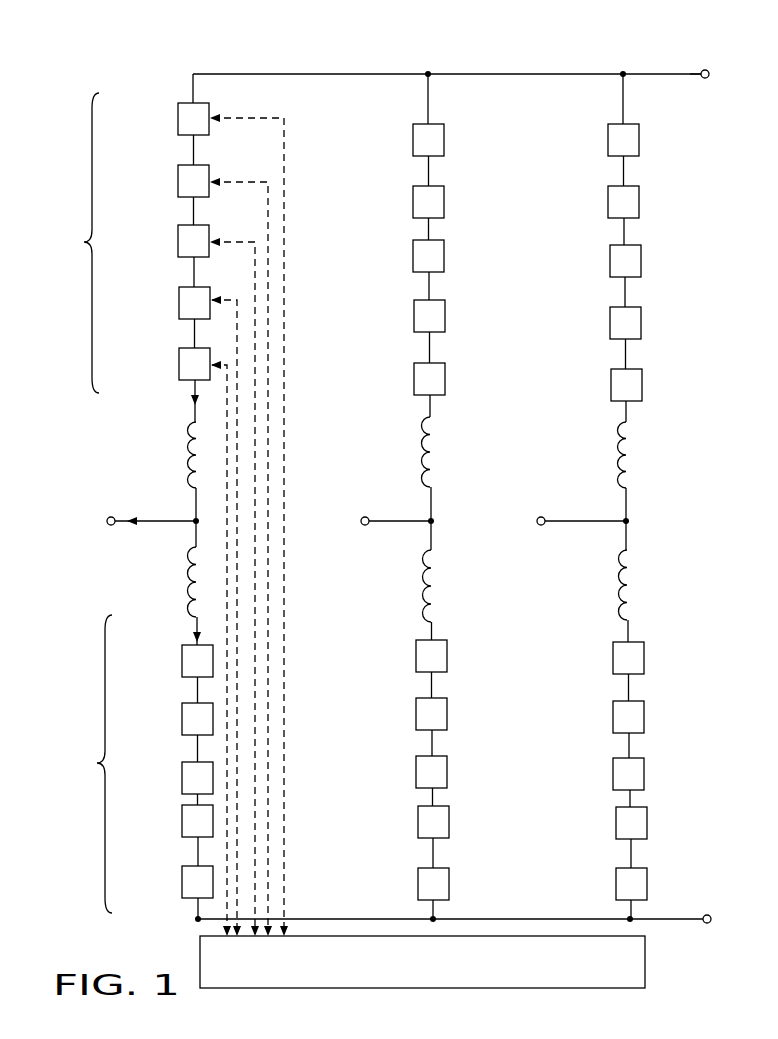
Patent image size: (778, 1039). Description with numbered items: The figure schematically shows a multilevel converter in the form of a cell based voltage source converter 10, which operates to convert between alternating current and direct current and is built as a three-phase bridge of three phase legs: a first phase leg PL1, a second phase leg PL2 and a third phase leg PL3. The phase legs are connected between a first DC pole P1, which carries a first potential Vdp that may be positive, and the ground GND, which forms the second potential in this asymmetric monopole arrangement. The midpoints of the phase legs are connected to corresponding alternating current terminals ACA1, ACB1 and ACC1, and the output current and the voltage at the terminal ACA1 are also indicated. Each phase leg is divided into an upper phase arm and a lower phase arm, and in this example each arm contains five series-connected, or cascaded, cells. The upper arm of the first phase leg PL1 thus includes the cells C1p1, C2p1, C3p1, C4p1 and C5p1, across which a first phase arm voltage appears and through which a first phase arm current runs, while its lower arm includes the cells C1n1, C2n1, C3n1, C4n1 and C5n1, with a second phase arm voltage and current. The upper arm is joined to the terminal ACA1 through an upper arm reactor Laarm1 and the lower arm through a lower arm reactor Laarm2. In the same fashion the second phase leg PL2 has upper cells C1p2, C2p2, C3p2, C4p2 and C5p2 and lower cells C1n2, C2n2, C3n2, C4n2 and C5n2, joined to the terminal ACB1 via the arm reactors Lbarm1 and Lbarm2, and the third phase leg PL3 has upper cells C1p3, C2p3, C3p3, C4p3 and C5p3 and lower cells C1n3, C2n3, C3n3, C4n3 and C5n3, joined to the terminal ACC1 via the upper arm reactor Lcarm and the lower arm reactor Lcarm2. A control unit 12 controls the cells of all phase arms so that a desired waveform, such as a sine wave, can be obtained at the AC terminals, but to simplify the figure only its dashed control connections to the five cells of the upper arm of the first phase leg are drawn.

The cell based voltage source converter 10 is at (148, 42).
The control unit 12 is at (200, 965).
The first phase leg PL1 is at (195, 70).
The second phase leg PL2 is at (445, 81).
The third phase leg PL3 is at (621, 81).
The first DC pole P1 is at (688, 55).
The first potential Vdp is at (686, 94).
The ground terminal GND is at (687, 933).
The alternating current terminal ACA1 is at (116, 521).
The alternating current terminal ACB1 is at (365, 523).
The alternating current terminal ACC1 is at (542, 523).
The cell C1p1 is at (158, 119).
The cell C2p1 is at (158, 181).
The cell C3p1 is at (158, 241).
The cell C4p1 is at (158, 303).
The cell C5p1 is at (158, 364).
The cell C1n1 is at (162, 661).
The cell C2n1 is at (162, 719).
The cell C3n1 is at (162, 778).
The cell C4n1 is at (162, 821).
The cell C5n1 is at (162, 882).
The cell C1p2 is at (393, 140).
The cell C2p2 is at (393, 202).
The cell C3p2 is at (393, 256).
The cell C4p2 is at (394, 316).
The cell C5p2 is at (394, 379).
The cell C1n2 is at (395, 656).
The cell C2n2 is at (395, 714).
The cell C3n2 is at (395, 772).
The cell C4n2 is at (398, 822).
The cell C5n2 is at (398, 884).
The cell C1p3 is at (588, 140).
The cell C2p3 is at (588, 202).
The cell C3p3 is at (589, 261).
The cell C4p3 is at (590, 323).
The cell C5p3 is at (592, 385).
The cell C1n3 is at (593, 658).
The cell C2n3 is at (593, 717).
The cell C3n3 is at (593, 774).
The cell C4n3 is at (596, 823).
The cell C5n3 is at (596, 884).
The upper arm reactor Laarm1 is at (156, 455).
The lower arm reactor Laarm2 is at (154, 582).
The upper arm reactor Lbarm1 is at (391, 452).
The lower arm reactor Lbarm2 is at (389, 586).
The arm inductor Lcarm is at (589, 455).
The lower arm reactor Lcarm2 is at (588, 585).